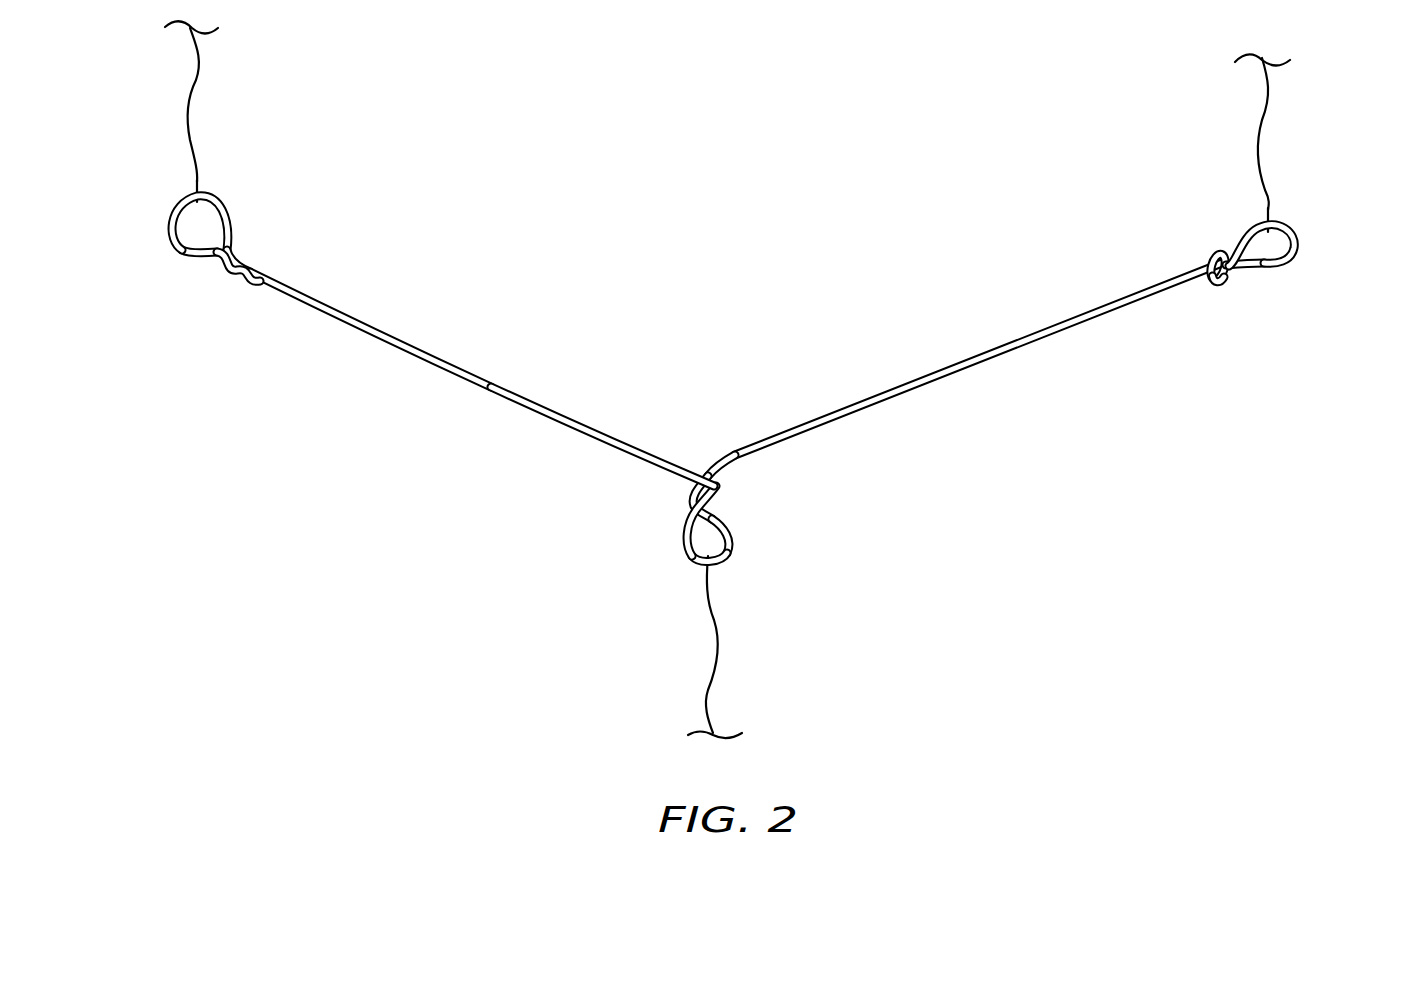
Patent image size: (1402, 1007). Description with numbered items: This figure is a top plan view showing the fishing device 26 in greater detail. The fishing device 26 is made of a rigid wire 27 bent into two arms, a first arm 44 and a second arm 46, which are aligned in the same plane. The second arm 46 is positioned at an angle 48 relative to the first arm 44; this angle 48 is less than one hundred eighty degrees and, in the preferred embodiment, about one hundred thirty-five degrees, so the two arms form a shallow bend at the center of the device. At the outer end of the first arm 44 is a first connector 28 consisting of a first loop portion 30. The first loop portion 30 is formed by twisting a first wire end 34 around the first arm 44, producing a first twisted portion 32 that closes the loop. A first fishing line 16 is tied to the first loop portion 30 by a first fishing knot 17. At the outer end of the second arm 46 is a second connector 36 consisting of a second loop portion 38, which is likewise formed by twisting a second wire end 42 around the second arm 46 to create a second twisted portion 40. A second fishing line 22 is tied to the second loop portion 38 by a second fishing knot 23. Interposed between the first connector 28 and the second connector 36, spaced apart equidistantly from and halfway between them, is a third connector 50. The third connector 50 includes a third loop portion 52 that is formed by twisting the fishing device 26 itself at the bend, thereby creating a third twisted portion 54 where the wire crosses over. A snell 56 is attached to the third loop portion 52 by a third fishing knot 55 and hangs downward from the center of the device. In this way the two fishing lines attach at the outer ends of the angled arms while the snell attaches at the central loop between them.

The first fishing line 16 is at (180, 97).
The first fishing knot 17 is at (196, 194).
The second fishing line 22 is at (1254, 124).
The second fishing knot 23 is at (1268, 222).
The fishing device 26 is at (730, 334).
The rigid wire 27 is at (543, 422).
The first connector 28 is at (160, 222).
The first loop portion 30 is at (187, 252).
The first twisted portion 32 is at (240, 250).
The first wire end 34 is at (264, 268).
The second connector 36 is at (1308, 238).
The second loop portion 38 is at (1282, 268).
The second twisted portion 40 is at (1210, 252).
The second wire end 42 is at (1225, 285).
The first arm 44 is at (430, 352).
The second arm 46 is at (1043, 325).
The angle 48 is at (741, 447).
The third connector 50 is at (748, 566).
The third loop portion 52 is at (737, 533).
The third twisted portion 54 is at (690, 494).
The third fishing knot 55 is at (705, 572).
The snell 56 is at (730, 655).